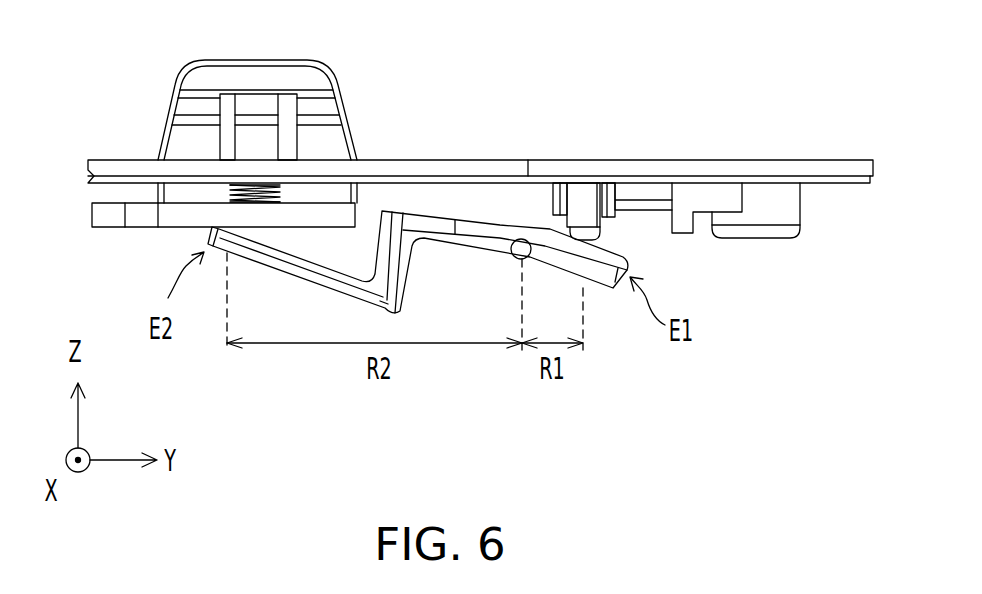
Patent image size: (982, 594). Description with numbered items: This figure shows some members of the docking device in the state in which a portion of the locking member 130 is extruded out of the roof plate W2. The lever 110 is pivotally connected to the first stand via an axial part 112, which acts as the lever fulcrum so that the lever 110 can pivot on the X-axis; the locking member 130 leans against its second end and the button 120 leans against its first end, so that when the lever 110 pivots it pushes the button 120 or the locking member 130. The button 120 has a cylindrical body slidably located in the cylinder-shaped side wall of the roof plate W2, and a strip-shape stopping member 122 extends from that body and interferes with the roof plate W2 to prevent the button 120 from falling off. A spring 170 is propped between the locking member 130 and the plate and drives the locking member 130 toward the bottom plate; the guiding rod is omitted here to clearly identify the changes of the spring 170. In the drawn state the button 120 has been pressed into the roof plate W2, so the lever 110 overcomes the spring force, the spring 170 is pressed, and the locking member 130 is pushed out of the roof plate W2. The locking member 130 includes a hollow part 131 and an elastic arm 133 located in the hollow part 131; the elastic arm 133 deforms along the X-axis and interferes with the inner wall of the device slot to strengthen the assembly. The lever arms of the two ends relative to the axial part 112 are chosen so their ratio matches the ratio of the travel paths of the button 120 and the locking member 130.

The lever 110 is at (418, 202).
The axial part 112 is at (526, 180).
The button 120 is at (581, 159).
The strip-shape stopping member 122 is at (701, 170).
The locking member 130 is at (194, 238).
The hollow part 131 is at (194, 117).
The elastic arm 133 is at (250, 69).
The spring 170 is at (196, 238).
The roof plate W2 is at (480, 141).